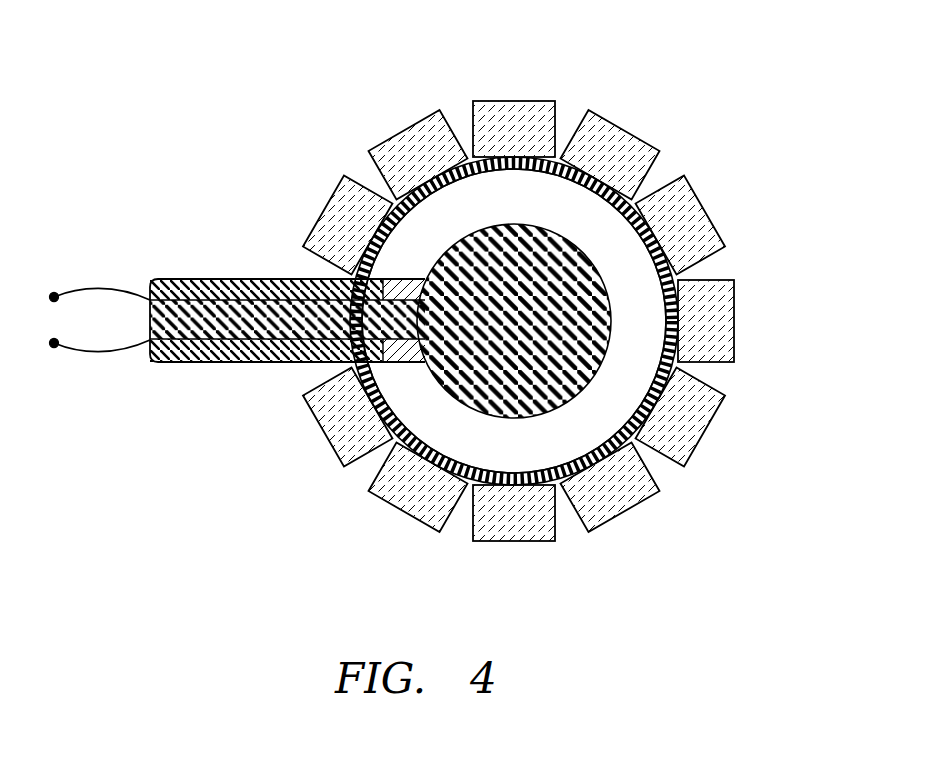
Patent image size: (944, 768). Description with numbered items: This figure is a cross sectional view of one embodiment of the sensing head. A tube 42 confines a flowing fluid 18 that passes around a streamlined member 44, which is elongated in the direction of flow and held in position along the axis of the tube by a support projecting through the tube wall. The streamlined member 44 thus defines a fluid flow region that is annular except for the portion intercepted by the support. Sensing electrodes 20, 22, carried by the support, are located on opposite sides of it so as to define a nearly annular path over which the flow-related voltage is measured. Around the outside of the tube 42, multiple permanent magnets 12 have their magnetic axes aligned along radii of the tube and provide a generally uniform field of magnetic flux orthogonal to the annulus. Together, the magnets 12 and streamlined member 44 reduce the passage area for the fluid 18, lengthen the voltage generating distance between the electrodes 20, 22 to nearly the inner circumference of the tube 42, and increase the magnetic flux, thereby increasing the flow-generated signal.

The magnets 12 is at (523, 101).
The tube 42 is at (655, 192).
The flowing fluid 18 is at (532, 216).
The streamlined member 44 is at (514, 321).
The sensing electrode 20 is at (300, 280).
The sensing electrode 22 is at (340, 363).